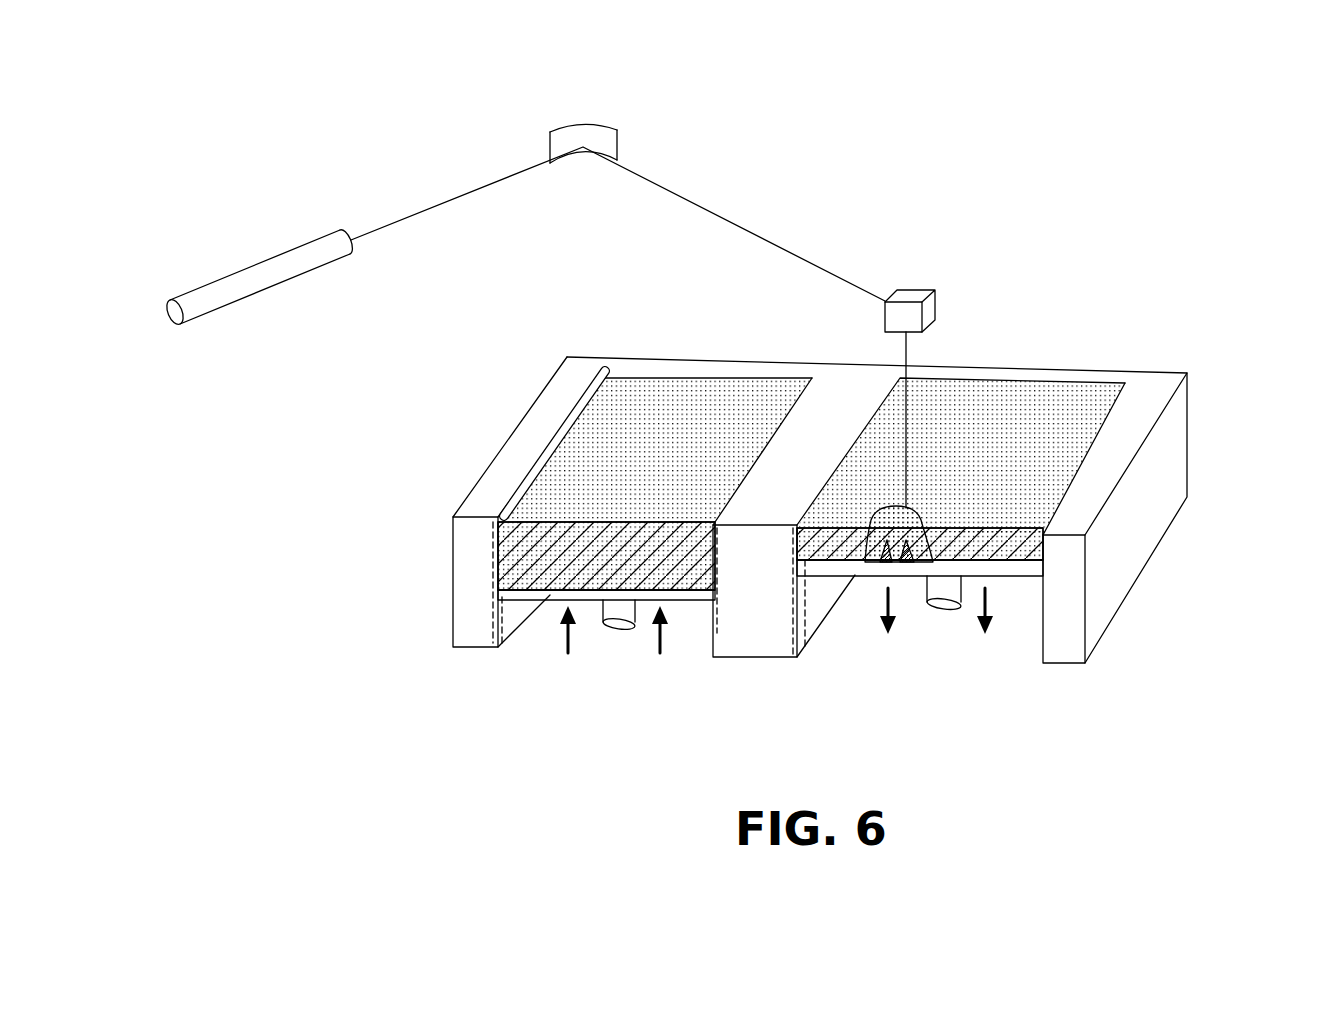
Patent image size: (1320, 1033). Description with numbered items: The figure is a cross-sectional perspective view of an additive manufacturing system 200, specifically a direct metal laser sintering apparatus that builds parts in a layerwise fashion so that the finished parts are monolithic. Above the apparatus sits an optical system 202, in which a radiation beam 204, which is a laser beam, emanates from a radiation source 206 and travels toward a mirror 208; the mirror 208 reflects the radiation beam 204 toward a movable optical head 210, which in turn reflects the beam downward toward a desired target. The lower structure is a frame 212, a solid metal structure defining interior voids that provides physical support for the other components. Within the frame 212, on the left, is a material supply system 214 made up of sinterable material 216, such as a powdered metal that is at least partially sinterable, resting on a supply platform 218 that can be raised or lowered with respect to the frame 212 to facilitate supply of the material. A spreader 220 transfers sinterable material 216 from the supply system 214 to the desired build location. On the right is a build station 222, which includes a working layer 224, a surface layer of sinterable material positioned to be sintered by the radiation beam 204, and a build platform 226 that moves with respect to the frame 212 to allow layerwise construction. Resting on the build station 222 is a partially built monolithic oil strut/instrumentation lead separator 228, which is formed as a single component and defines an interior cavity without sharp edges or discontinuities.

The additive manufacturing system 200 is at (810, 544).
The optical system 202 is at (589, 271).
The radiation beam 204 is at (442, 198).
The radiation source 206 is at (220, 277).
The mirror 208 is at (593, 125).
The movable optical head 210 is at (915, 290).
The frame 212 is at (1185, 443).
The material supply system 214 is at (603, 522).
The sinterable material 216 is at (528, 543).
The supply platform 218 is at (548, 598).
The spreader 220 is at (598, 378).
The build station 222 is at (1034, 565).
The working layer 224 is at (945, 480).
The build platform 226 is at (847, 565).
The monolithic oil strut/instrumentation lead separator 228 is at (897, 562).